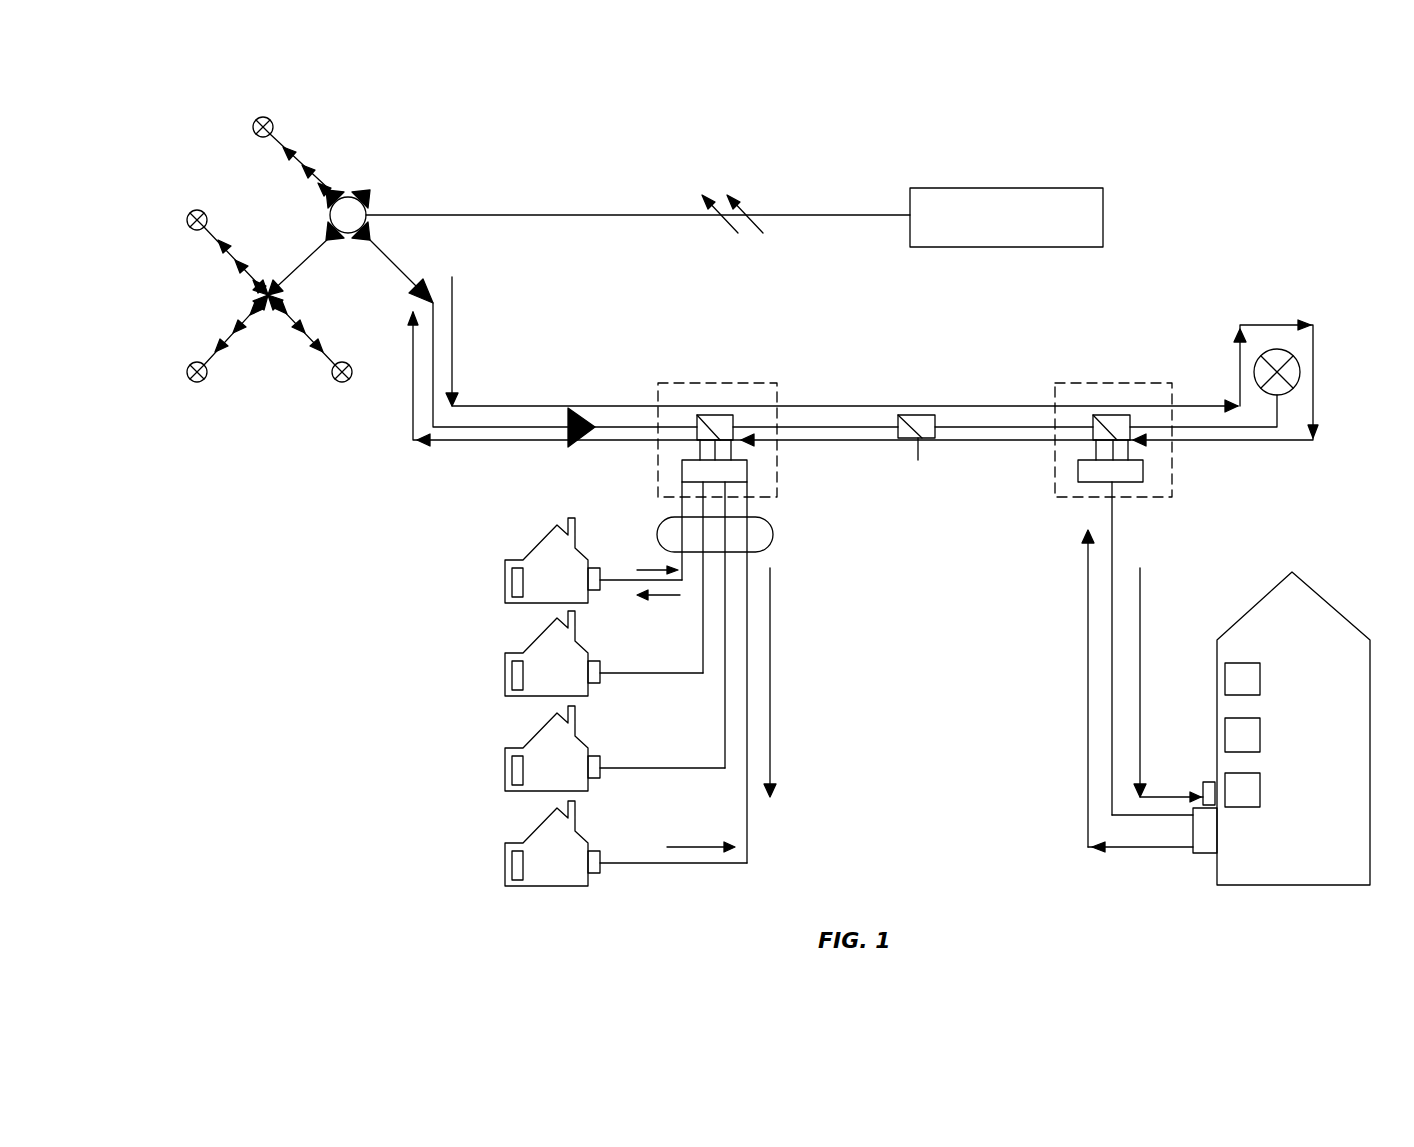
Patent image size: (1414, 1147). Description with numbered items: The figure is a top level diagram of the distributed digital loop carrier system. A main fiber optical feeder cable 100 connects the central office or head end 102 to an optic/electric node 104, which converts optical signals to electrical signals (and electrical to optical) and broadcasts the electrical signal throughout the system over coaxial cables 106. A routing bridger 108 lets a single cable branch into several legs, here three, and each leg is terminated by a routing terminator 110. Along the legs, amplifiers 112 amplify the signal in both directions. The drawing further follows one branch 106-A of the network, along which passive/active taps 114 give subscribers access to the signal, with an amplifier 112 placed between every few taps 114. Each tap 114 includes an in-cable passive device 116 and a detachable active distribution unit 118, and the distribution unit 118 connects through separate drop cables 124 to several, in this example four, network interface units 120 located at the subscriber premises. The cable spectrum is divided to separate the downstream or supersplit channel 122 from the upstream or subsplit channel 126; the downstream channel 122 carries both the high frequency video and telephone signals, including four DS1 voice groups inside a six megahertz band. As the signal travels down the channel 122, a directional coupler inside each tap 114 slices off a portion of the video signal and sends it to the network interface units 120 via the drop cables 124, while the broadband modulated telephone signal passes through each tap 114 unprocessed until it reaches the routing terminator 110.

The main fiber optical feeder cable 100 is at (540, 214).
The central office 102 is at (910, 196).
The optic/electric node 104 is at (350, 234).
The coaxial cables 106 is at (300, 156).
The branch 106-A is at (418, 290).
The routing bridger 108 is at (257, 296).
The routing terminator 110 is at (253, 127).
The amplifier 112 is at (322, 357).
The passive/active tap 114 is at (682, 383).
The in-cable passive device 116 is at (720, 415).
The distribution unit 118 is at (747, 471).
The network interface unit 120 is at (602, 590).
The downstream channel 122 is at (487, 406).
The drop cables 124 is at (773, 532).
The upstream channel 126 is at (1000, 442).